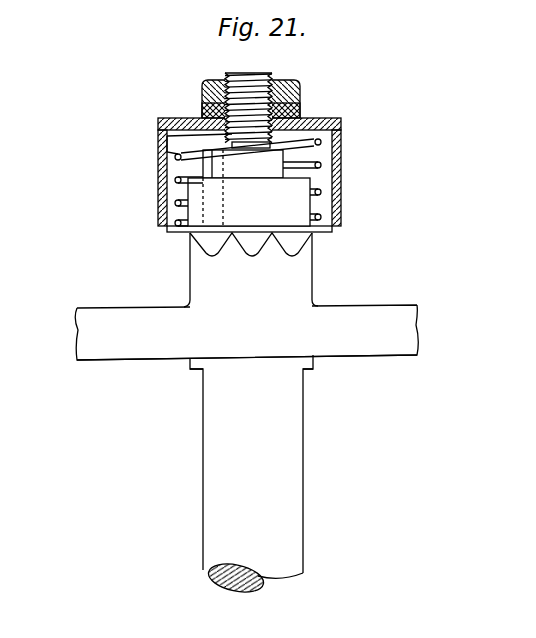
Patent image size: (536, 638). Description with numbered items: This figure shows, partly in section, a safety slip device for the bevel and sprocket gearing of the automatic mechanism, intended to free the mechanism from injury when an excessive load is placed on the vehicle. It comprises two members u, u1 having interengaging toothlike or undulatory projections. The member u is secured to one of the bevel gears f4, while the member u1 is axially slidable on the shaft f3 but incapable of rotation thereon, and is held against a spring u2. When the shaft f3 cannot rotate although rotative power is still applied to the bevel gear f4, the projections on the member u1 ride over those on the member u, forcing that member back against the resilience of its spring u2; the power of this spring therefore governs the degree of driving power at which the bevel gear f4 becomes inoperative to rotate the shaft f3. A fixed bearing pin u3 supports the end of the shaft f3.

The member u is at (287, 278).
The member u1 is at (285, 208).
The spring u2 is at (186, 155).
The fixed bearing pin u3 is at (252, 88).
The shaft f3 is at (221, 449).
The bevel gear f4 is at (142, 336).